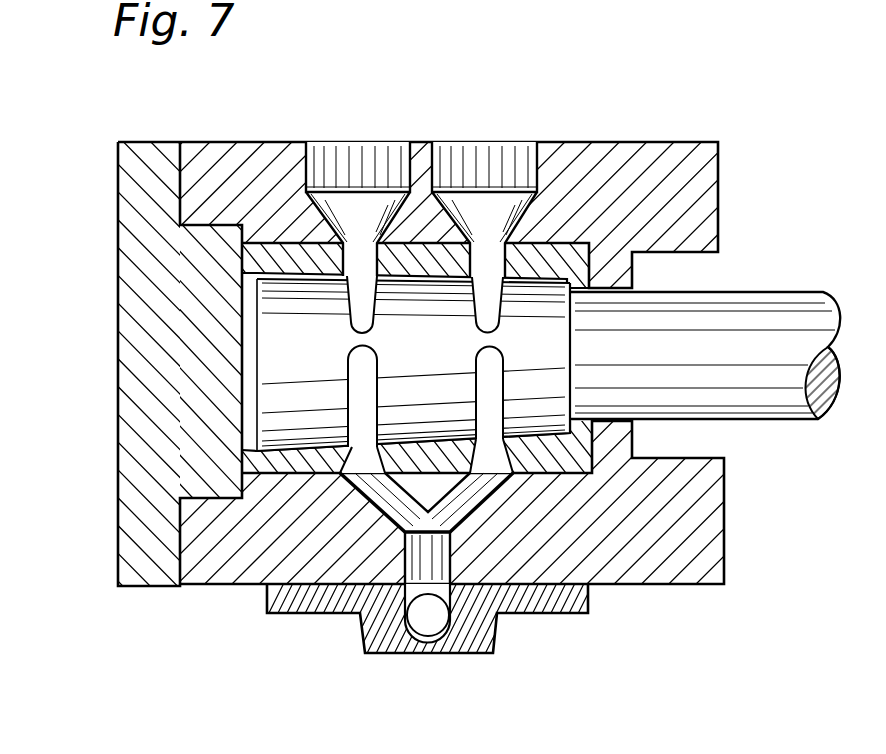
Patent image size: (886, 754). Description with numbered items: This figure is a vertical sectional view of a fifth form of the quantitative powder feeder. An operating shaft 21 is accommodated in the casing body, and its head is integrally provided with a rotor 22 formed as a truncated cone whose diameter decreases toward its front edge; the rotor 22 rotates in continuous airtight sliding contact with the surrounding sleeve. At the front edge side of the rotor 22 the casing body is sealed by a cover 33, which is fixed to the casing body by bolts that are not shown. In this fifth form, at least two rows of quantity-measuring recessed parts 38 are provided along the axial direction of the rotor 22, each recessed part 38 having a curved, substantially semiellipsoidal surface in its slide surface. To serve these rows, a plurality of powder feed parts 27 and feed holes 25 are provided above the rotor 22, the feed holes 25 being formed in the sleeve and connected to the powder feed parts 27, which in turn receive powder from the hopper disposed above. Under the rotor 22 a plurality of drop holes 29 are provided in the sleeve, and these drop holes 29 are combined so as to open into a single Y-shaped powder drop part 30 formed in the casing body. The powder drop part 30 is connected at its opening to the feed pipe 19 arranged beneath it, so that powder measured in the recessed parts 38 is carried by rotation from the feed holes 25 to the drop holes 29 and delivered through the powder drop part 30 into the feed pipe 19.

The cover 33 is at (118, 191).
The quantity-measuring recessed part 38 is at (362, 320).
The rotor 22 is at (275, 352).
The operating shaft 21 is at (730, 292).
The powder feed part 27 is at (361, 158).
The feed hole 25 is at (358, 267).
The drop hole 29 is at (357, 458).
The feed pipe 19 is at (441, 640).
The powder drop part 30 is at (493, 637).